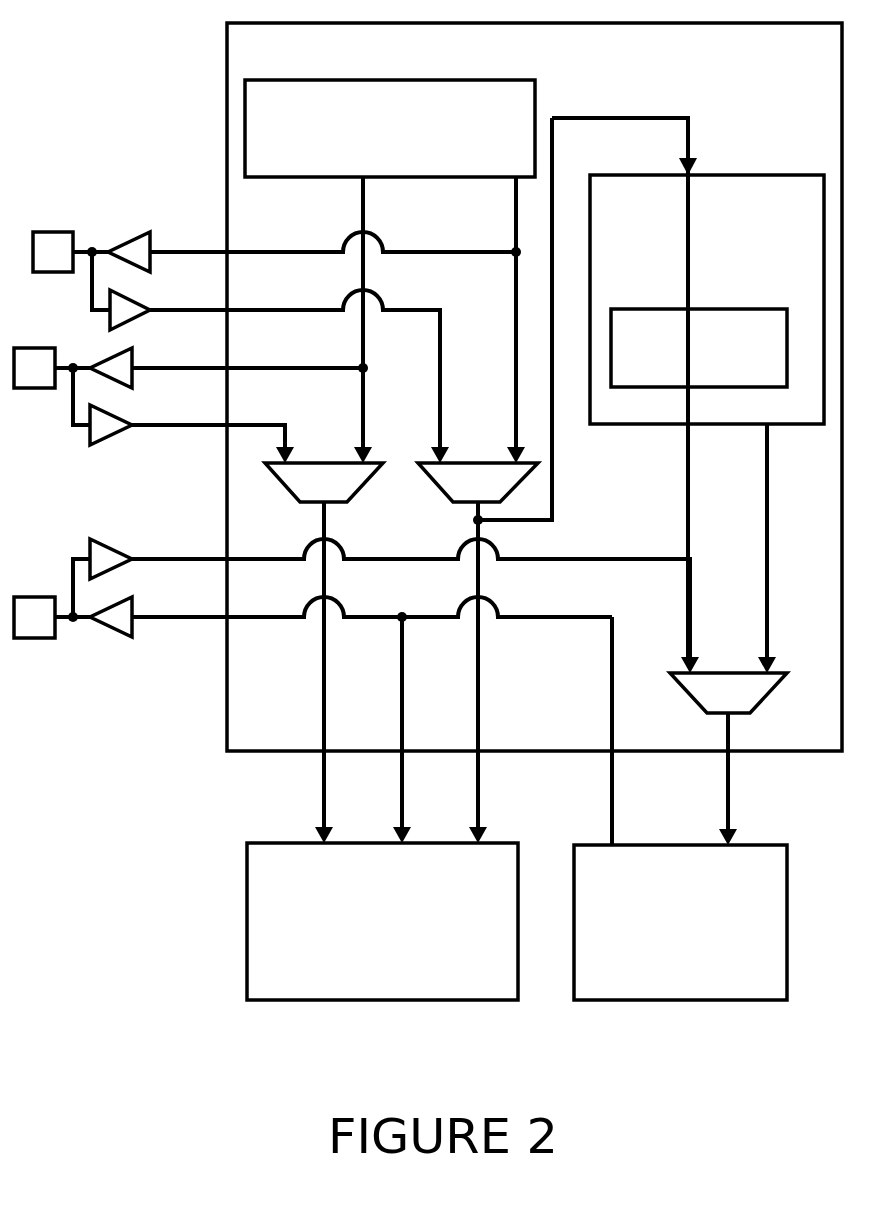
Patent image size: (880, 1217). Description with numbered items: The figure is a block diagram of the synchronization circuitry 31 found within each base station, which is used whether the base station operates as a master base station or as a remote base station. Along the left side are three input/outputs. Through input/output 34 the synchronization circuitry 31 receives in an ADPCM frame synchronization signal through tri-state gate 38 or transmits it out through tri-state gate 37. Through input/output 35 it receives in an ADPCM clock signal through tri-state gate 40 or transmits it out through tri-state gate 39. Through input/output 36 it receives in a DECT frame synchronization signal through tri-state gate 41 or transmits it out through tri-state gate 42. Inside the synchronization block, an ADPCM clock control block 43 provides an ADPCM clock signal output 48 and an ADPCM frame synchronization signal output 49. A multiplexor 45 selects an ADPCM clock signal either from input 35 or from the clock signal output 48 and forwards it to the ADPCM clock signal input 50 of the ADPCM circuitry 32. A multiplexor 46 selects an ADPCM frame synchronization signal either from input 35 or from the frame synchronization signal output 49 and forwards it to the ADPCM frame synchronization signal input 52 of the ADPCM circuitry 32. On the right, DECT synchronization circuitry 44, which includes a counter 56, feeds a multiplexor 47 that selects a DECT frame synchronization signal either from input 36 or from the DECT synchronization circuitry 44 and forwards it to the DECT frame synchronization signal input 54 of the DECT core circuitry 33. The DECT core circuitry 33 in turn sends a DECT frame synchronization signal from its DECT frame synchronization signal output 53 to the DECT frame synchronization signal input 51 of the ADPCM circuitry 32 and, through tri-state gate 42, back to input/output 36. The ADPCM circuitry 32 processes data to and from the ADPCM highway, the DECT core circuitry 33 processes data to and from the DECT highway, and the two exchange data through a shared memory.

The synchronization circuitry 31 is at (240, 753).
The ADPCM circuitry 32 is at (357, 1003).
The DECT core circuitry 33 is at (683, 1003).
The input/output 34 is at (57, 228).
The input/output 35 is at (27, 390).
The input/output 36 is at (27, 640).
The tri-state gate 37 is at (135, 228).
The tri-state gate 38 is at (143, 303).
The tri-state gate 39 is at (132, 348).
The tri-state gate 40 is at (125, 417).
The tri-state gate 41 is at (125, 548).
The tri-state gate 42 is at (112, 633).
The ADPCM clock control block 43 is at (260, 180).
The DECT synchronization circuitry 44 is at (625, 428).
The multiplexor 45 is at (363, 483).
The multiplexor 46 is at (481, 457).
The multiplexor 47 is at (780, 685).
The ADPCM clock signal output 48 is at (366, 190).
The ADPCM frame synchronization signal output 49 is at (514, 196).
The ADPCM clock signal input 50 is at (328, 772).
The DECT frame synchronization signal input 51 is at (406, 772).
The ADPCM frame synchronization signal input 52 is at (482, 772).
The DECT frame synchronization signal output 53 is at (616, 772).
The DECT frame synchronization signal input 54 is at (732, 772).
The counter 56 is at (752, 306).